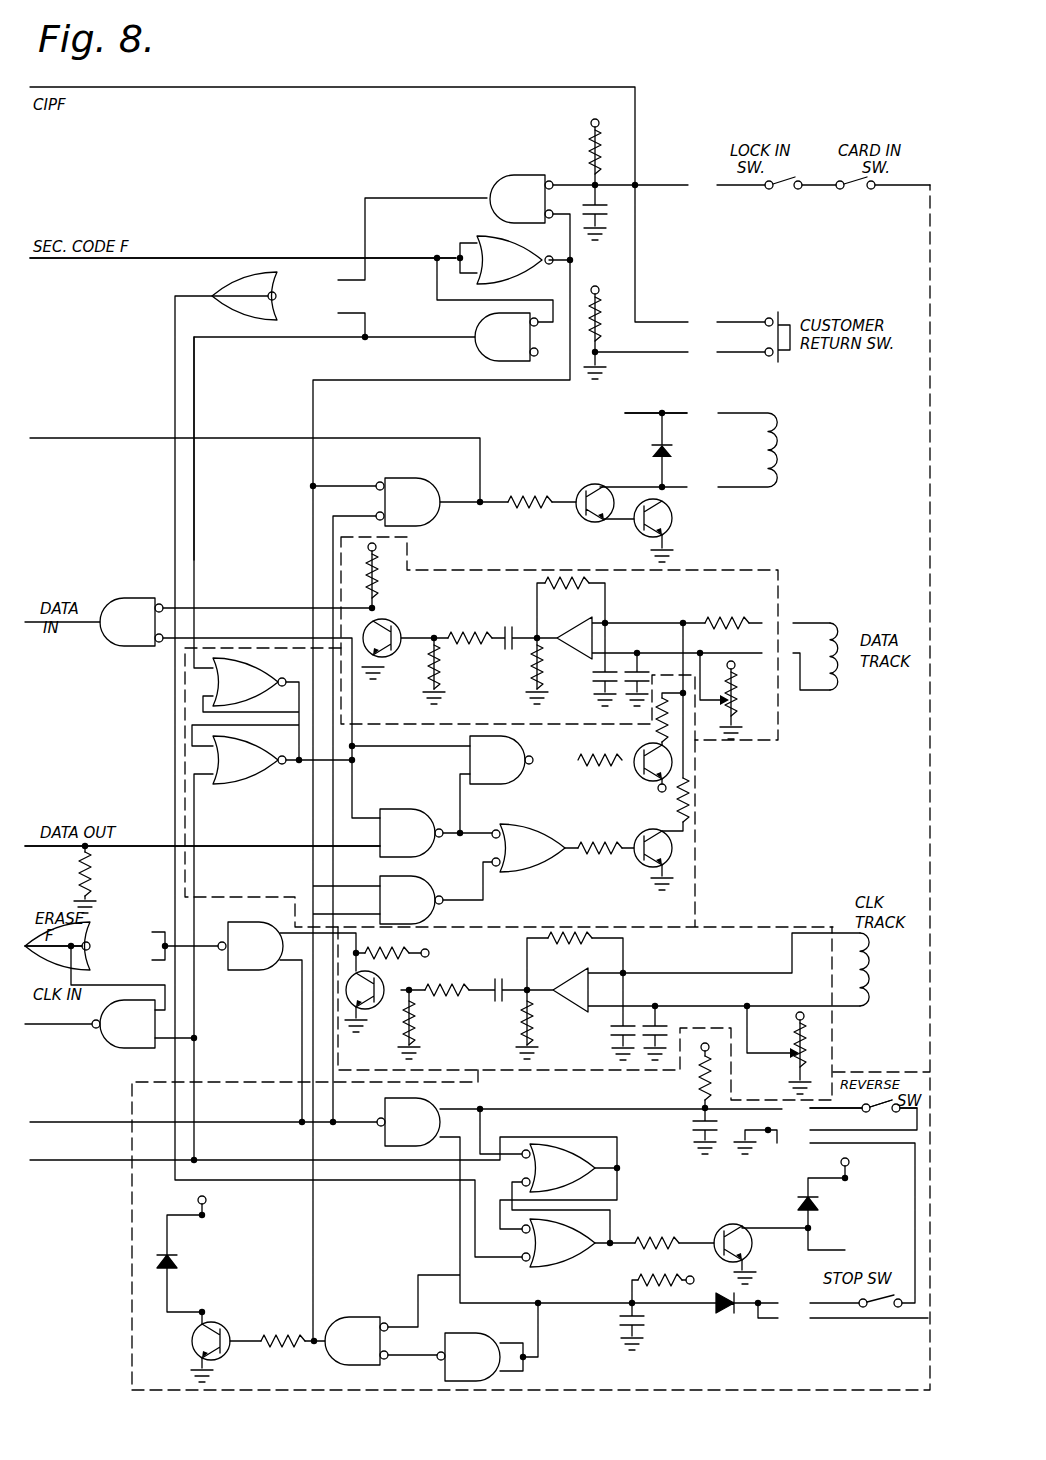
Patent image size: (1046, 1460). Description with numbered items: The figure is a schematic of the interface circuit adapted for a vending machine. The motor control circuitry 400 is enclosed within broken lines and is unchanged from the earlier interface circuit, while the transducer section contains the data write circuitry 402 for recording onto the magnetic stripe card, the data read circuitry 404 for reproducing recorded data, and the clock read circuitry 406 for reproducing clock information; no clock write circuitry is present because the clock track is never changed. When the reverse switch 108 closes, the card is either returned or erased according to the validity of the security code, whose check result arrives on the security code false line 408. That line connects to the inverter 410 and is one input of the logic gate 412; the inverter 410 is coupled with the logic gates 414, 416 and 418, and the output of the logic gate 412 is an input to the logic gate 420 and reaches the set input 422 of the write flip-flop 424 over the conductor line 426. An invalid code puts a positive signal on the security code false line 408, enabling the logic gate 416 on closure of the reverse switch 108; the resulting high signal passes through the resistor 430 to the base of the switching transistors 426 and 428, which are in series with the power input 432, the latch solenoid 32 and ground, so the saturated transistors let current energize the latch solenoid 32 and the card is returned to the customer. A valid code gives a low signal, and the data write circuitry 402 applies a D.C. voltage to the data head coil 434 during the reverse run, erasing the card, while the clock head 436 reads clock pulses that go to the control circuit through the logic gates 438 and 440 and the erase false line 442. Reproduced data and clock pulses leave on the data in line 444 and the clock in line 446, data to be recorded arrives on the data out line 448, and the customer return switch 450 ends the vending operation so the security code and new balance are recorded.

The latch solenoid 32 is at (779, 456).
The reverse switch 108 is at (874, 1105).
The motor control circuitry 400 is at (130, 1232).
The data write circuitry 402 is at (185, 758).
The data read circuitry 404 is at (752, 571).
The clock read circuitry 406 is at (745, 927).
The security code false line 408 is at (203, 258).
The inverter 410 is at (484, 238).
The logic gate 412 is at (477, 349).
The logic gate 414 is at (511, 177).
The logic gate 416 is at (429, 477).
The logic gate 418 is at (427, 881).
The logic gate 420 is at (288, 312).
The set input 422 is at (200, 673).
The write flip-flop 424 is at (291, 784).
The switching transistor 426 is at (591, 485).
The switching transistor 428 is at (673, 523).
The resistor 430 is at (524, 496).
The power input 432 is at (645, 413).
The data head coil 434 is at (848, 690).
The clock head 436 is at (855, 1008).
The logic gate 438 is at (264, 972).
The logic gate 440 is at (157, 920).
The erase false line 442 is at (70, 950).
The data in line 444 is at (104, 637).
The clock in line 446 is at (97, 1031).
The data out line 448 is at (135, 832).
The customer return switch 450 is at (783, 316).